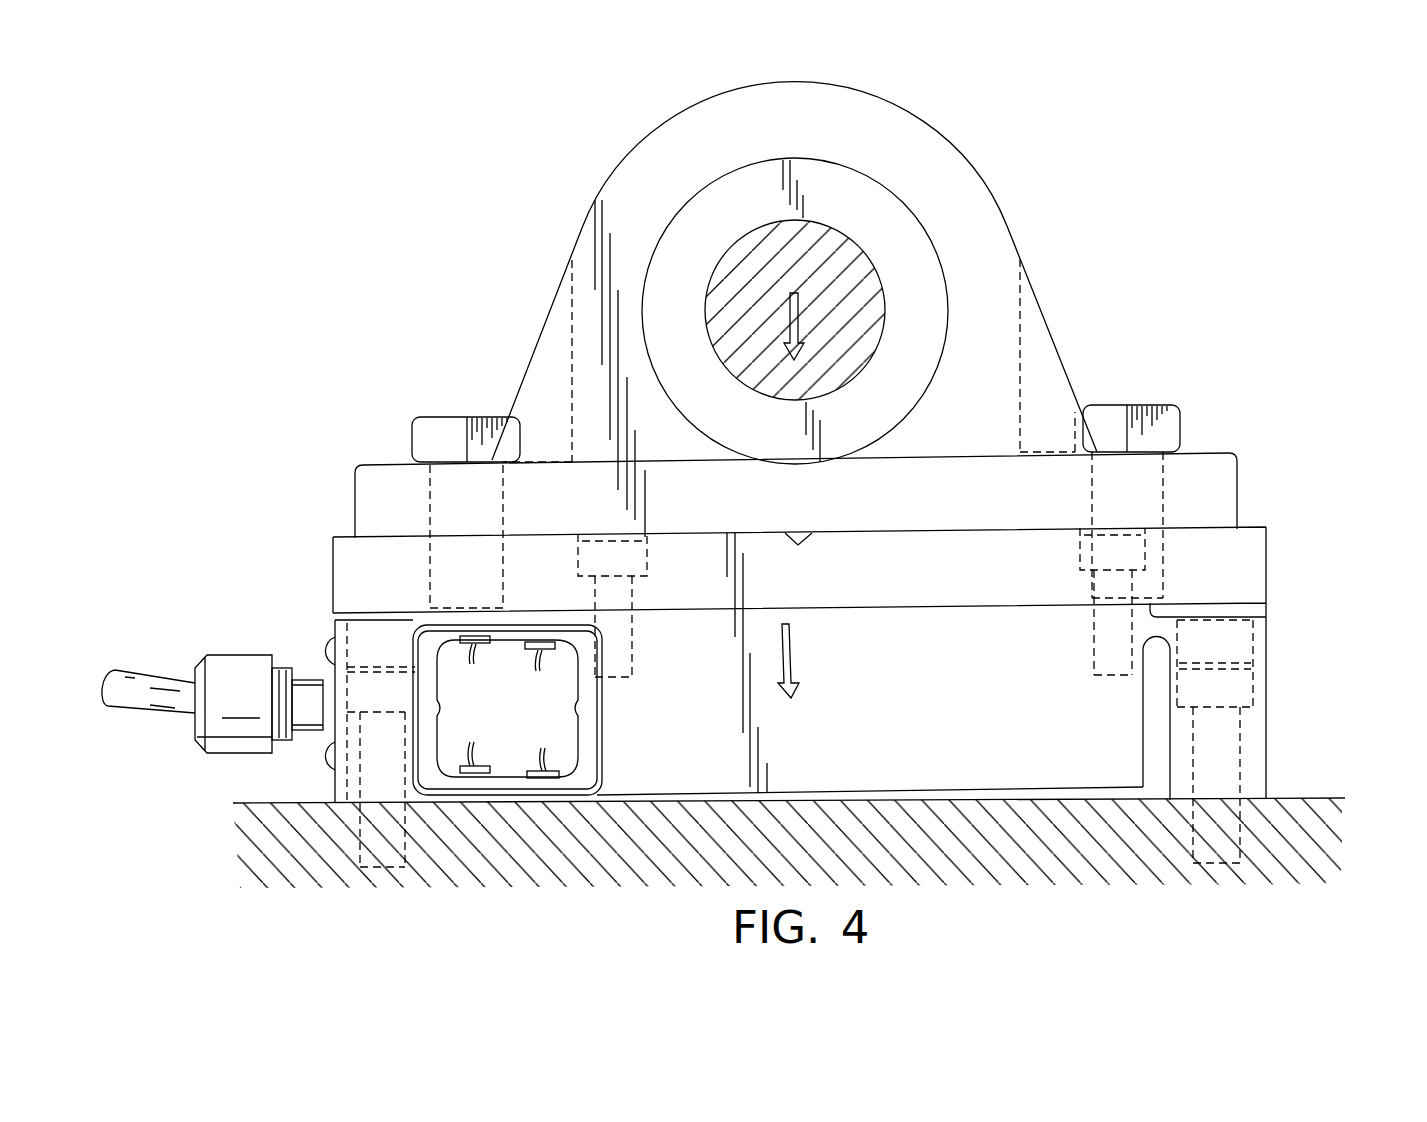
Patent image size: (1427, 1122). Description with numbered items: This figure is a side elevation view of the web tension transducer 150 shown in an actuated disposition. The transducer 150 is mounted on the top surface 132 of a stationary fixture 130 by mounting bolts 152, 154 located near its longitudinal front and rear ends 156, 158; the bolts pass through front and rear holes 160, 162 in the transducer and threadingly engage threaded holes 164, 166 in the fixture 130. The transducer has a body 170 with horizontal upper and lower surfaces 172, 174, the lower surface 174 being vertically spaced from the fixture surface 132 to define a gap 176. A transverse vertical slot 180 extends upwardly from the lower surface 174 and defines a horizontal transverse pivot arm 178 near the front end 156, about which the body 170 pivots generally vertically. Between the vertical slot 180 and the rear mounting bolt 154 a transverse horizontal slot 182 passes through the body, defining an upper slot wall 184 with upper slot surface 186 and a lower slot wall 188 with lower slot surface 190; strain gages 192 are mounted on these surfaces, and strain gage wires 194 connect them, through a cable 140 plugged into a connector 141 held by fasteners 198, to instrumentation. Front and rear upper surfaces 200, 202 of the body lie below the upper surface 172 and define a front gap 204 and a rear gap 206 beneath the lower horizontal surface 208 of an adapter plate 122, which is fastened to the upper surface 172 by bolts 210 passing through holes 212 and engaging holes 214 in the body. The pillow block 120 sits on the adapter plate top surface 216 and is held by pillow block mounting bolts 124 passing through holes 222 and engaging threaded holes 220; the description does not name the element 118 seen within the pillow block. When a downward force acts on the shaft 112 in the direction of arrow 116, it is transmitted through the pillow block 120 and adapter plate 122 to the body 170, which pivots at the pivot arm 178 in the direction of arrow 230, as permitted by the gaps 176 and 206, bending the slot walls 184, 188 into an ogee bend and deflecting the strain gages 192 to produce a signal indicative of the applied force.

The shaft 112 is at (821, 234).
The arrow 116 is at (799, 320).
The bearing bore 118 is at (873, 206).
The pillow block 120 is at (984, 170).
The adapter plate 122 is at (1276, 536).
The pillow block mounting bolts 124 is at (447, 417).
The stationary fixture 130 is at (1316, 793).
The top surface 132 is at (912, 798).
The cable 140 is at (170, 667).
The connector 141 is at (310, 667).
The transducer 150 is at (1311, 672).
The mounting bolt 152 is at (1218, 860).
The mounting bolt 154 is at (388, 865).
The front end 156 is at (1267, 640).
The rear end 158 is at (330, 792).
The front hole 160 is at (1240, 727).
The rear hole 162 is at (267, 827).
The threaded hole 164 is at (1175, 848).
The threaded hole 166 is at (330, 855).
The body 170 is at (933, 598).
The upper surface 172 is at (822, 608).
The lower surface 174 is at (972, 805).
The gap 176 is at (848, 795).
The pivot arm 178 is at (1160, 627).
The transverse vertical slot 180 is at (1157, 728).
The transverse horizontal slot 182 is at (555, 716).
The upper slot wall 184 is at (515, 637).
The upper slot surface 186 is at (493, 687).
The lower slot wall 188 is at (522, 783).
The lower slot surface 190 is at (497, 717).
The strain gages 192 is at (480, 638).
The strain gage wires 194 is at (468, 650).
The fasteners 198 is at (320, 645).
The front upper surface 200 is at (1223, 613).
The rear upper surface 202 is at (385, 618).
The front gap 204 is at (1258, 610).
The rear gap 206 is at (401, 612).
The lower horizontal surface 208 is at (962, 612).
The bolts 210 is at (640, 540).
The holes 212 is at (640, 596).
The holes 214 is at (633, 645).
The adapter plate top surface 216 is at (878, 530).
The threaded holes 220 is at (505, 540).
The holes 222 is at (430, 490).
The arrow 230 is at (792, 660).